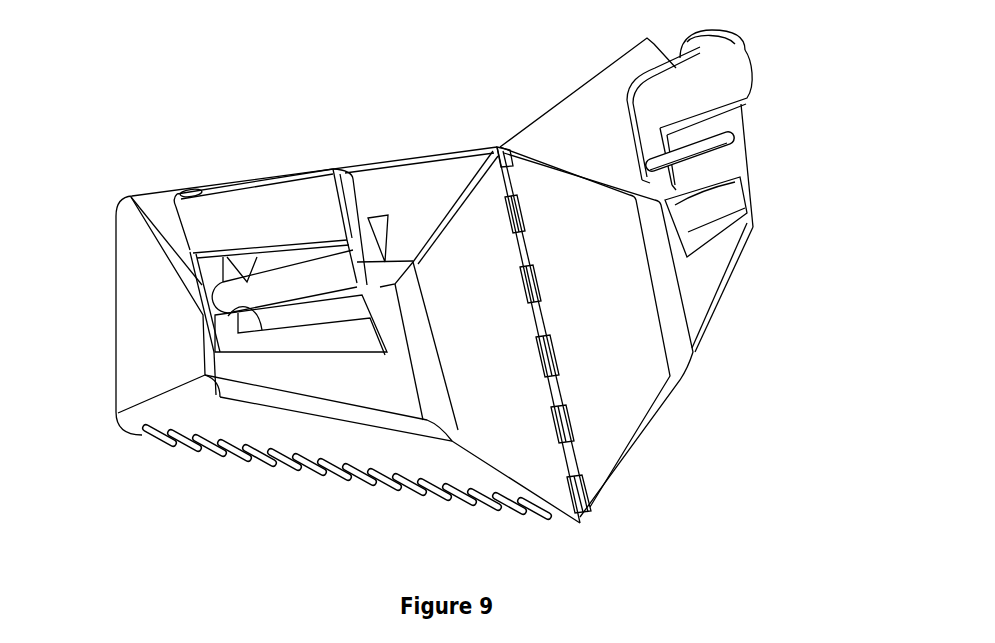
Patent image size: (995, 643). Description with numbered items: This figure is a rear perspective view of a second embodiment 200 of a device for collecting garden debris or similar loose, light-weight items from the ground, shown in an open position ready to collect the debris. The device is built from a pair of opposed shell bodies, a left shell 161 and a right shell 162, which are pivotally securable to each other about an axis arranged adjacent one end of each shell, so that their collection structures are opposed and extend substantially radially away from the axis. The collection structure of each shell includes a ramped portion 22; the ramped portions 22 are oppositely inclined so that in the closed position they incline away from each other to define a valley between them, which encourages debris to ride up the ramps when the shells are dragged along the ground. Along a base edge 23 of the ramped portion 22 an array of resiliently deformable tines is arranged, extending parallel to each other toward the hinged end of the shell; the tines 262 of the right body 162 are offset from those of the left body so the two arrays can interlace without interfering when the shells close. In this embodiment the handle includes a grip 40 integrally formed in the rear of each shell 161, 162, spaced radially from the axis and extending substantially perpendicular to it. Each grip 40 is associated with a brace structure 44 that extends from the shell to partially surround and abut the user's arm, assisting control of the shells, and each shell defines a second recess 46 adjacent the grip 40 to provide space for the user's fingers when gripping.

The ramped portion 22 is at (459, 300).
The base edge 23 is at (575, 520).
The grip 40 is at (243, 293).
The brace structure 44 is at (247, 222).
The second recess 46 is at (307, 330).
The left shell 161 is at (583, 128).
The right shell 162 is at (413, 183).
The second embodiment 200 is at (747, 439).
The tines 262 is at (258, 460).